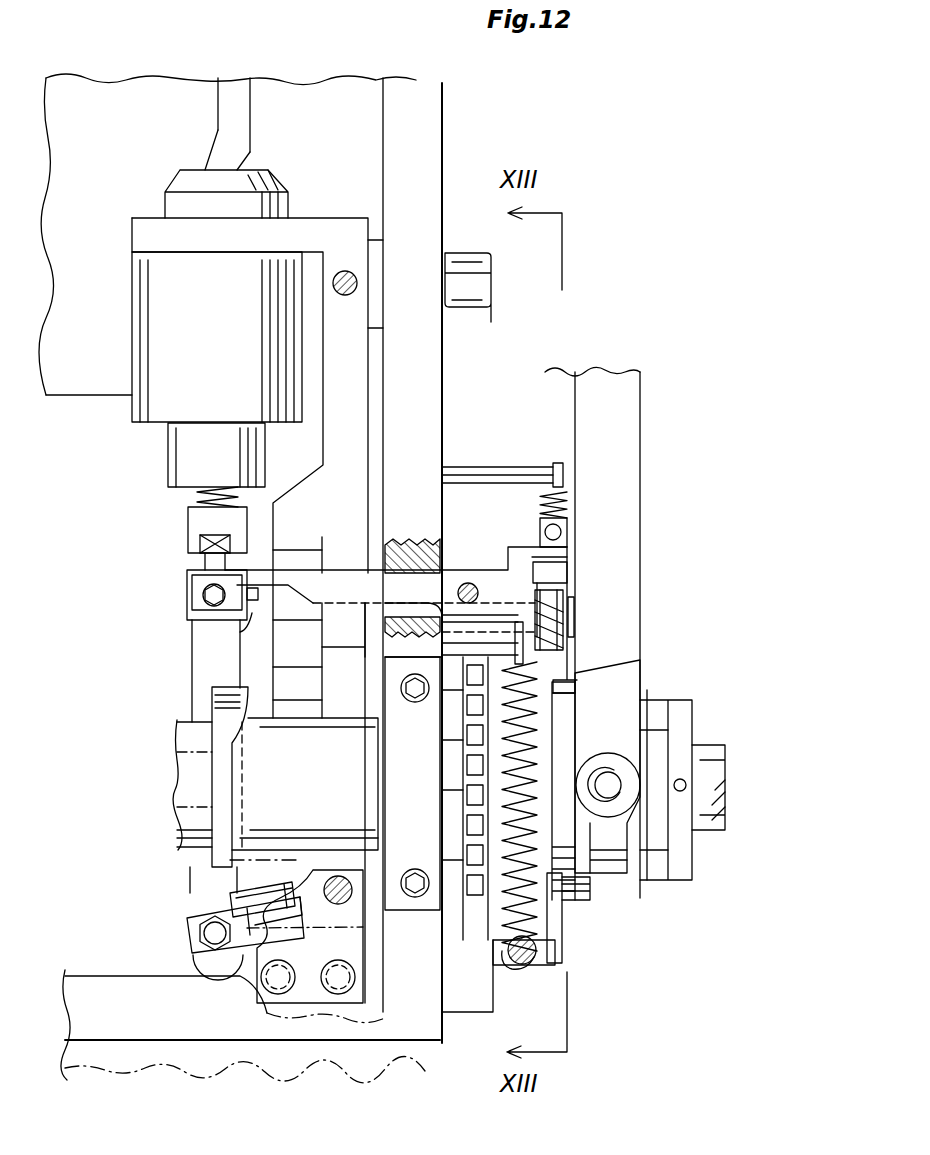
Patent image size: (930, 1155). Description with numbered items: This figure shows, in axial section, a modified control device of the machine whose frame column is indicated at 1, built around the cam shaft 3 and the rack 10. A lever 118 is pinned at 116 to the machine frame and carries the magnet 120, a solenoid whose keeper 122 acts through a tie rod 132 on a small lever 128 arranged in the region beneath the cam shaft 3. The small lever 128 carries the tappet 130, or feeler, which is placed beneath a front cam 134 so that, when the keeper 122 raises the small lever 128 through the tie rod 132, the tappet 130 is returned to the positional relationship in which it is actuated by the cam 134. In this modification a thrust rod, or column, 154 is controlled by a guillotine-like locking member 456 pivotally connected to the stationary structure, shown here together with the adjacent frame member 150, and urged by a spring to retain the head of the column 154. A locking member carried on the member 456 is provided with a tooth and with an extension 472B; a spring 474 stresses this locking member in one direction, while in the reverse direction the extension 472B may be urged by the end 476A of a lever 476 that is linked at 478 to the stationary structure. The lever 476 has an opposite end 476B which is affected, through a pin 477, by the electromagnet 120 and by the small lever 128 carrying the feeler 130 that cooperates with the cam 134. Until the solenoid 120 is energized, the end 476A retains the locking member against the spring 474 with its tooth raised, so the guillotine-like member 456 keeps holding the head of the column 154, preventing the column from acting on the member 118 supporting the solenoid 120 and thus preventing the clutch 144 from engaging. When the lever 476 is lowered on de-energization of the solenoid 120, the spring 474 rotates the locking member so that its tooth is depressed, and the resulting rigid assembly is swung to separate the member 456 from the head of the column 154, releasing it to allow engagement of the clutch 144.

The frame column 1 is at (430, 174).
The cam shaft 3 is at (175, 830).
The rack 10 is at (484, 875).
The pin 116 is at (348, 274).
The lever 118 is at (355, 402).
The magnet 120 is at (150, 418).
The keeper 122 is at (192, 520).
The small lever 128 is at (192, 948).
The tappet 130 is at (228, 901).
The tie rod 132 is at (195, 676).
The front cam 134 is at (225, 752).
The clutch 144 is at (570, 903).
The frame member 150 is at (560, 374).
The thrust rod 154 is at (553, 610).
The guillotine-like locking member 456 is at (575, 672).
The extension 472B is at (567, 570).
The spring 474 is at (563, 493).
The lever 476 is at (330, 576).
The end of lever 476A is at (524, 551).
The end of lever 476B is at (238, 578).
The pin 477 is at (240, 632).
The link 478 is at (446, 546).